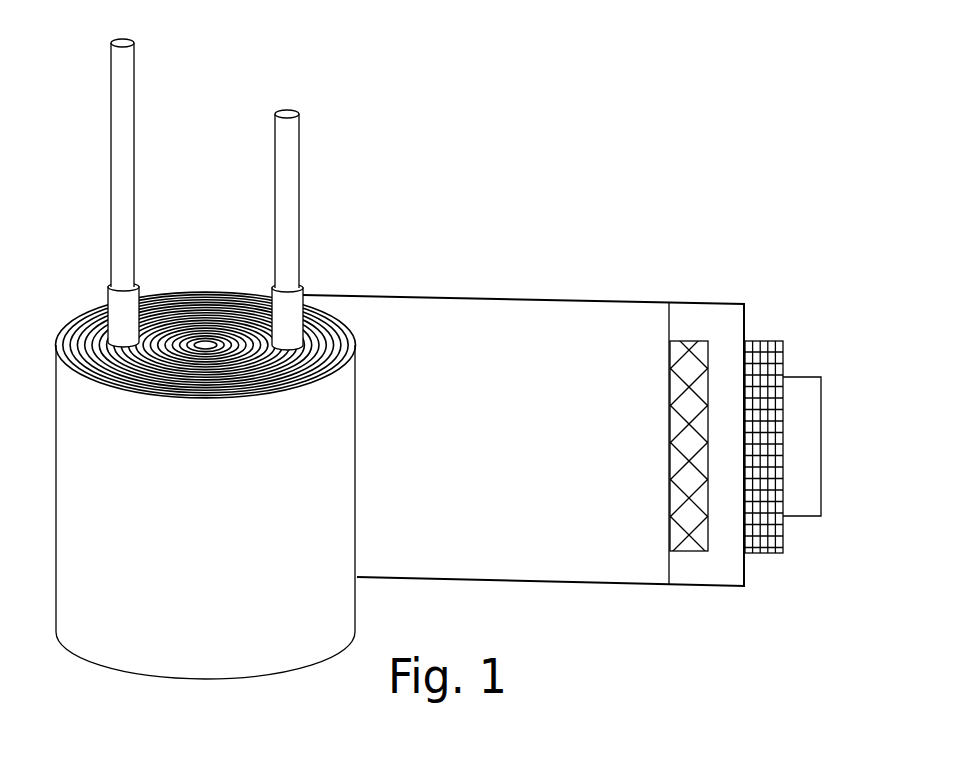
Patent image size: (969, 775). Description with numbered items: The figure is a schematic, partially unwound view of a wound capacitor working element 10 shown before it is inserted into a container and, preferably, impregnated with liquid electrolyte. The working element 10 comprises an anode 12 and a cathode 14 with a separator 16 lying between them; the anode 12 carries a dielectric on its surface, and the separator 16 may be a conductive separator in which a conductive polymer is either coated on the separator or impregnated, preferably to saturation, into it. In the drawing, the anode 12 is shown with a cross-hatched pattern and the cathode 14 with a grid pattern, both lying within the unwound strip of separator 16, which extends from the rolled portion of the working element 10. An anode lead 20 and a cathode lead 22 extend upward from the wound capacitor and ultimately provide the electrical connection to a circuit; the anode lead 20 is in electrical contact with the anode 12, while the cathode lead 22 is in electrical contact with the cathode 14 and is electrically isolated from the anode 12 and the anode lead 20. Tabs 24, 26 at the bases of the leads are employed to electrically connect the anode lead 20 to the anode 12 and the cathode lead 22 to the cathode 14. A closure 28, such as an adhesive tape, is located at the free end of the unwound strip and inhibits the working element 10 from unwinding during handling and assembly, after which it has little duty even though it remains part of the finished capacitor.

The working element 10 is at (438, 242).
The anode 12 is at (697, 540).
The cathode 14 is at (764, 522).
The separator 16 is at (718, 312).
The anode lead 20 is at (122, 118).
The cathode lead 22 is at (290, 238).
The tab 24 is at (128, 320).
The tab 26 is at (289, 323).
The closure 28 is at (803, 473).